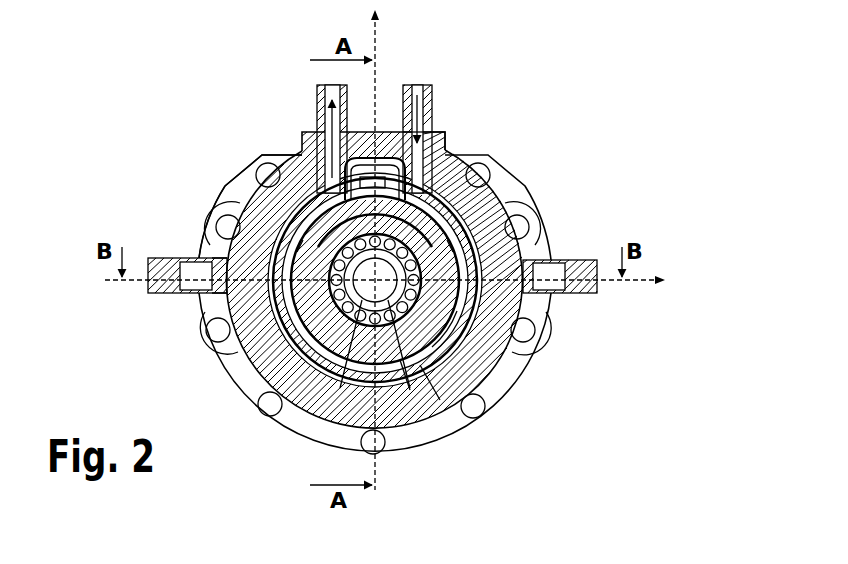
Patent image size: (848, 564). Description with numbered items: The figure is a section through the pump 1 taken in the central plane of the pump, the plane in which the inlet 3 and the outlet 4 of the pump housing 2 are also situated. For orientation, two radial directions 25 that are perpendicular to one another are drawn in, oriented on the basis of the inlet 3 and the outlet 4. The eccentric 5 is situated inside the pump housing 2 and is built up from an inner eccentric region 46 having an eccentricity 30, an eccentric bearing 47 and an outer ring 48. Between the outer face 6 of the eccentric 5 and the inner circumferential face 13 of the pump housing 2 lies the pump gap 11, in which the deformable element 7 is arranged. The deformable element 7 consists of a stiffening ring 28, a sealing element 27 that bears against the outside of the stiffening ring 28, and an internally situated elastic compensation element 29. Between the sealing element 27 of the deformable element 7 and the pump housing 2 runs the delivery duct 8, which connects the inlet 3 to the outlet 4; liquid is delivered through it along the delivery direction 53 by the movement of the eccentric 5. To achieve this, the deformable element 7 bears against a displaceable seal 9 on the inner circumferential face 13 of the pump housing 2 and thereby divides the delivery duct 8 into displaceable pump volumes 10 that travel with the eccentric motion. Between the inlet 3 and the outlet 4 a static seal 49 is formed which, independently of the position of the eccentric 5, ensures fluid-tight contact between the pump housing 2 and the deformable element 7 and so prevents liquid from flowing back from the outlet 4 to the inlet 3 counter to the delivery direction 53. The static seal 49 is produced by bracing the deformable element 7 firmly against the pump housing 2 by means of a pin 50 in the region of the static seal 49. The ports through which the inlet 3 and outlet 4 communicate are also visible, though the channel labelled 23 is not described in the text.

The pump 1 is at (176, 86).
The pump housing 2 is at (503, 362).
The inlet 3 is at (422, 80).
The outlet 4 is at (318, 92).
The eccentric 5 is at (460, 378).
The outer face 6 is at (230, 205).
The deformable element 7 is at (240, 200).
The delivery duct 8 is at (345, 400).
The displaceable seal 9 is at (352, 412).
The displaceable pump volumes 10 is at (258, 352).
The pump gap 11 is at (280, 378).
The inner circumferential face 13 is at (247, 240).
The cavity 23 is at (437, 195).
The radial directions 25 is at (380, 46).
The sealing element 27 is at (212, 262).
The stiffening ring 28 is at (218, 308).
The elastic compensation element 29 is at (330, 355).
The eccentricity 30 is at (482, 355).
The inner eccentric region 46 is at (440, 400).
The eccentric bearing 47 is at (393, 400).
The outer ring 48 is at (410, 390).
The static seal 49 is at (443, 150).
The pin 50 is at (433, 118).
The delivery direction 53 is at (318, 115).